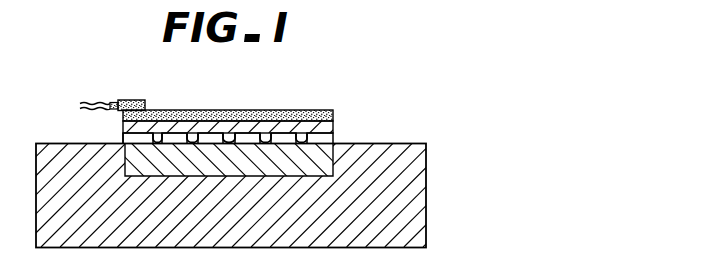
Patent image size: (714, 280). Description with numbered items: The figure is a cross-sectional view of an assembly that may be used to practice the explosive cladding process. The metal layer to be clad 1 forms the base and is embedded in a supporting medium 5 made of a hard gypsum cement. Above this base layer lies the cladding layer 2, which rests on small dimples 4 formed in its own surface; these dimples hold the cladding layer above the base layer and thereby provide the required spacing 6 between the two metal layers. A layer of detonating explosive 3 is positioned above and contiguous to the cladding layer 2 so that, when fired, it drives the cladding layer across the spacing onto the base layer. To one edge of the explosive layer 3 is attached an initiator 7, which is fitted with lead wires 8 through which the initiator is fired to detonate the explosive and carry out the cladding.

The metal layer to be clad 1 is at (126, 163).
The cladding layer 2 is at (332, 124).
The detonating explosive layer 3 is at (193, 110).
The dimples 4 is at (312, 137).
The supporting medium 5 is at (428, 173).
The spacing 6 is at (128, 141).
The initiator 7 is at (135, 100).
The lead wires 8 is at (90, 108).